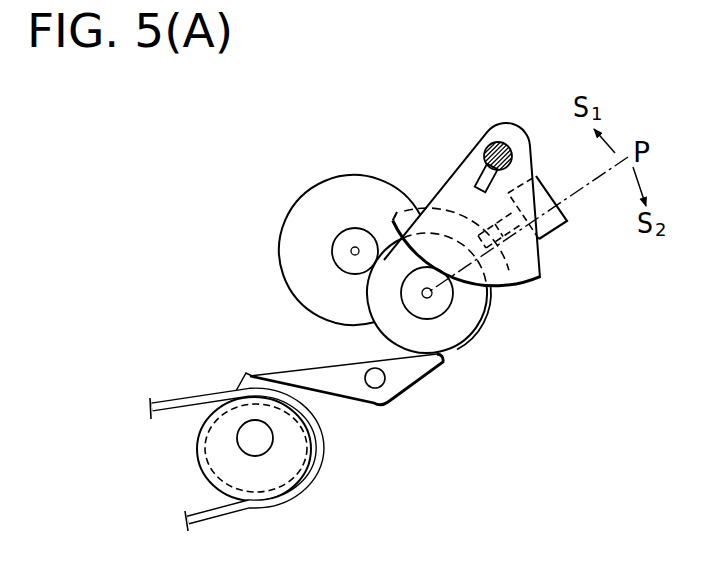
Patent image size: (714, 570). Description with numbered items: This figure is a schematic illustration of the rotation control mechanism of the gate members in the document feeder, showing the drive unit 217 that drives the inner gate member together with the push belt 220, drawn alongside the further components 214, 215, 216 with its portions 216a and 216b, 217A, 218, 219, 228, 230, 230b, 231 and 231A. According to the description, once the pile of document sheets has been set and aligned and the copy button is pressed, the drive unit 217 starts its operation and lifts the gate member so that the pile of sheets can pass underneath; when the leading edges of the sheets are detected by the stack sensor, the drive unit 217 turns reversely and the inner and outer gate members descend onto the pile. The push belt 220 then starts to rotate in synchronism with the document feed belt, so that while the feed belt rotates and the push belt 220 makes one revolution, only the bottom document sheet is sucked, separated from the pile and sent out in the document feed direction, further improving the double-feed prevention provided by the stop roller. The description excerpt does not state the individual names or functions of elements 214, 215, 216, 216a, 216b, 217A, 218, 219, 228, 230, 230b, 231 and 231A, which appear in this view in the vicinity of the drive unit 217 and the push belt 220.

The pin 214 is at (478, 186).
The swing plate 215 is at (532, 285).
The pressure roller 216 is at (501, 304).
The roller body 216a is at (434, 342).
The roller ring 216b is at (491, 325).
The drive unit 217 is at (302, 218).
The wheel shaft 217A is at (343, 245).
The slide block 218 is at (545, 263).
The projection 219 is at (392, 219).
The push belt 220 is at (168, 401).
The roller 228 is at (210, 485).
The roller core 230 is at (212, 447).
The spring end 230b is at (244, 372).
The lever 231 is at (283, 370).
The lever pivot hole 231A is at (381, 382).